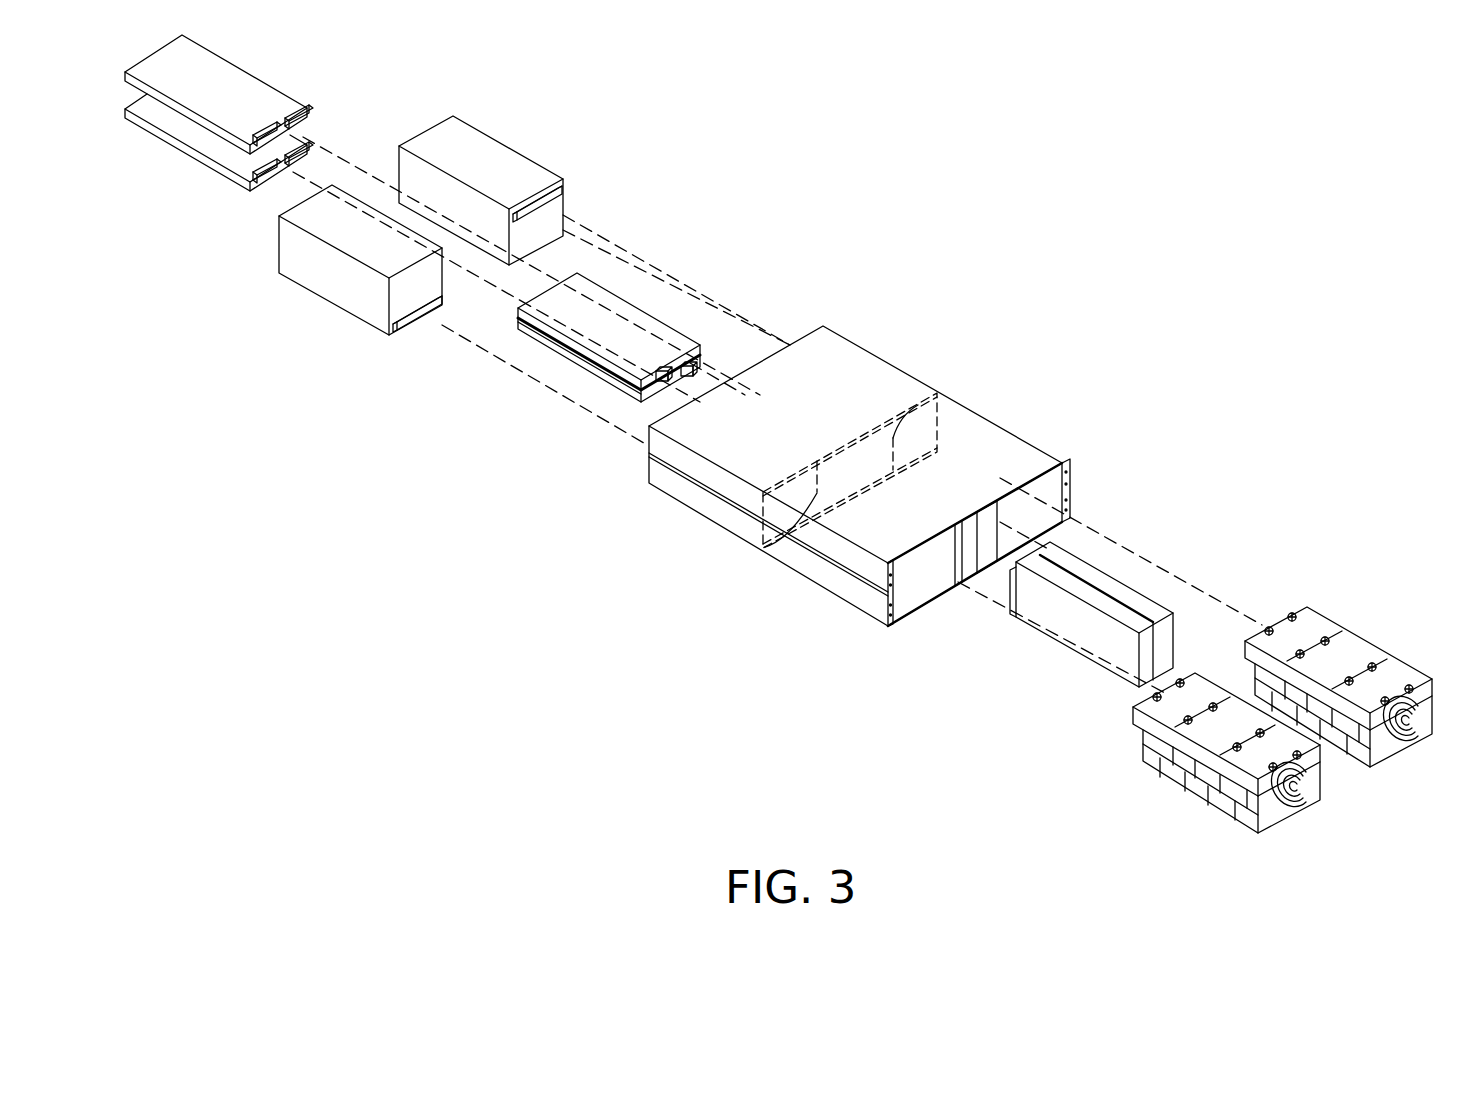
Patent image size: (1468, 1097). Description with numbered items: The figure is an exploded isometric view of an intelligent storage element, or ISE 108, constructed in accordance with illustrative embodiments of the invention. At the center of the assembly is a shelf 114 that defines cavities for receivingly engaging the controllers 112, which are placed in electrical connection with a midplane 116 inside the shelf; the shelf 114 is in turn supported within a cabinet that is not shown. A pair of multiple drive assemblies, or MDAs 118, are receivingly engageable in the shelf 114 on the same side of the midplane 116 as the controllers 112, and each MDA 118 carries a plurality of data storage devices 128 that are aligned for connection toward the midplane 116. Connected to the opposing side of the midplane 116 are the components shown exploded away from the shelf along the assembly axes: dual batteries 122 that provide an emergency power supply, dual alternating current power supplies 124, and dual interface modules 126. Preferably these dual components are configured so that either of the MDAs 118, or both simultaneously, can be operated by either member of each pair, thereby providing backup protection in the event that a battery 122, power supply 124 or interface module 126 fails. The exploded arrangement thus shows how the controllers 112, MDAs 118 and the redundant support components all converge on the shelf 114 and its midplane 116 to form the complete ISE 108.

The intelligent storage element 108 is at (905, 168).
The controllers 112 is at (1127, 593).
The shelf 114 is at (710, 525).
The midplane 116 is at (858, 452).
The multiple drive assemblies 118 is at (1326, 600).
The dual batteries 122 is at (603, 298).
The dual alternating current power supplies 124 is at (477, 160).
The dual interface modules 126 is at (245, 95).
The data storage devices 128 is at (1310, 617).